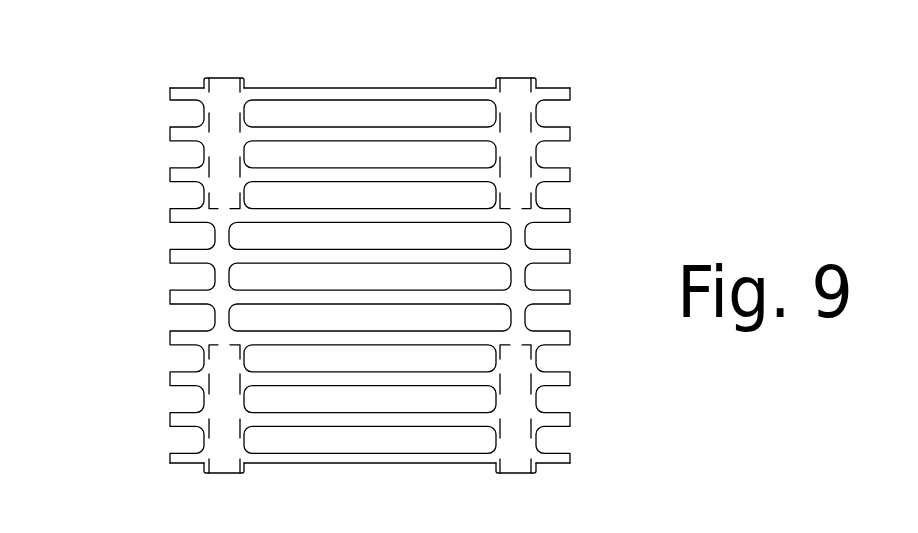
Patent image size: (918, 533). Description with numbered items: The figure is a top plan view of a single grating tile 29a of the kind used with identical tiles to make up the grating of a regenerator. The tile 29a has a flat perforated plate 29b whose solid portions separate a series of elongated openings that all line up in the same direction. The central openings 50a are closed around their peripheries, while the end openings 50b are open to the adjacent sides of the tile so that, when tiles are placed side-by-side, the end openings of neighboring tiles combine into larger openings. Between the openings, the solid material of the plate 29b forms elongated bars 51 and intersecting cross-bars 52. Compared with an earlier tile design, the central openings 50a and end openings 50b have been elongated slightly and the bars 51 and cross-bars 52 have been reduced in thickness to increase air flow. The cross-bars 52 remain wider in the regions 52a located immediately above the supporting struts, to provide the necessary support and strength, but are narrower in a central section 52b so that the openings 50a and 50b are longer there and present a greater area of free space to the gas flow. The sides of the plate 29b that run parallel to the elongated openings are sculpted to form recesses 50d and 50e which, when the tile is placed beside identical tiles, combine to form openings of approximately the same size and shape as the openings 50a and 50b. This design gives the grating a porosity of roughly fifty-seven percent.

The grating tile 29a is at (128, 298).
The flat perforated plate 29b is at (183, 133).
The central openings 50a is at (315, 110).
The end openings 50b is at (552, 196).
The recess 50d is at (372, 466).
The recess 50e is at (197, 87).
The elongated bars 51 is at (562, 137).
The cross-bars 52 is at (227, 462).
The regions of cross-bars above struts 52a is at (220, 92).
The central section of cross-bars 52b is at (223, 235).